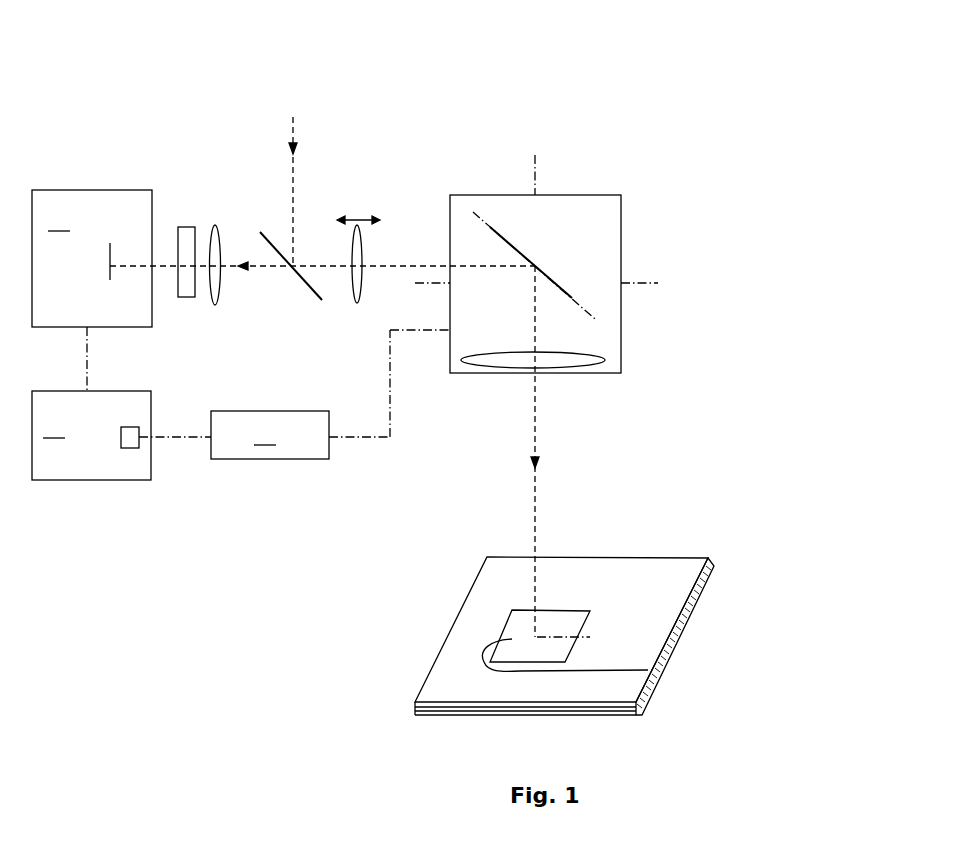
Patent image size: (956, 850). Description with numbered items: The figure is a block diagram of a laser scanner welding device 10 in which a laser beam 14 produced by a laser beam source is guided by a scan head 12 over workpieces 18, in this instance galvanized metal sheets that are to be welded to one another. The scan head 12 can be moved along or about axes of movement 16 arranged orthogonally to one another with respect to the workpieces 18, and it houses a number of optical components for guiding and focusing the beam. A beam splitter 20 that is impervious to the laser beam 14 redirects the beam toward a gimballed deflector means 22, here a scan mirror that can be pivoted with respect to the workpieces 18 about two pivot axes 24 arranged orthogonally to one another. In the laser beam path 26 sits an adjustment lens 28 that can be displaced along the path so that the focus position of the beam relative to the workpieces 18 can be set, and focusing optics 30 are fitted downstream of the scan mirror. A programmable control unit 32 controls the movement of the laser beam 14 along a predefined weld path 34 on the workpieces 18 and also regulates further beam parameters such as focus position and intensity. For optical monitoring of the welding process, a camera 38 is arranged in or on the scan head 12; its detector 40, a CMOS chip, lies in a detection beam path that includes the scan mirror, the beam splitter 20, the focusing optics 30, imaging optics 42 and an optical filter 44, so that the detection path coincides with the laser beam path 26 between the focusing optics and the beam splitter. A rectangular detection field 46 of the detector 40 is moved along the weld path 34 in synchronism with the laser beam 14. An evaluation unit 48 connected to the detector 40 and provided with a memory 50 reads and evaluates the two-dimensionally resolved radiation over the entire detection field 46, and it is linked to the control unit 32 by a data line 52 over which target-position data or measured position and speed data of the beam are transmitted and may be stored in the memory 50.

The laser scanner welding device 10 is at (554, 82).
The scan head 12 is at (622, 172).
The laser beam 14 is at (293, 136).
The axes of movement 16 is at (537, 162).
The workpieces 18 is at (437, 686).
The beam splitter 20 is at (305, 282).
The deflector means 22 is at (513, 243).
The pivot axes 24 is at (540, 268).
The laser beam path 26 is at (258, 268).
The adjustment lens 28 is at (357, 292).
The focusing optics 30 is at (575, 358).
The control unit 32 is at (270, 435).
The weld path 34 is at (590, 635).
The camera 38 is at (92, 258).
The detector 40 is at (110, 280).
The imaging optics 42 is at (217, 237).
The optical filter 44 is at (187, 237).
The detection field 46 is at (565, 620).
The evaluation unit 48 is at (91, 403).
The memory 50 is at (132, 448).
The data line 52 is at (165, 436).